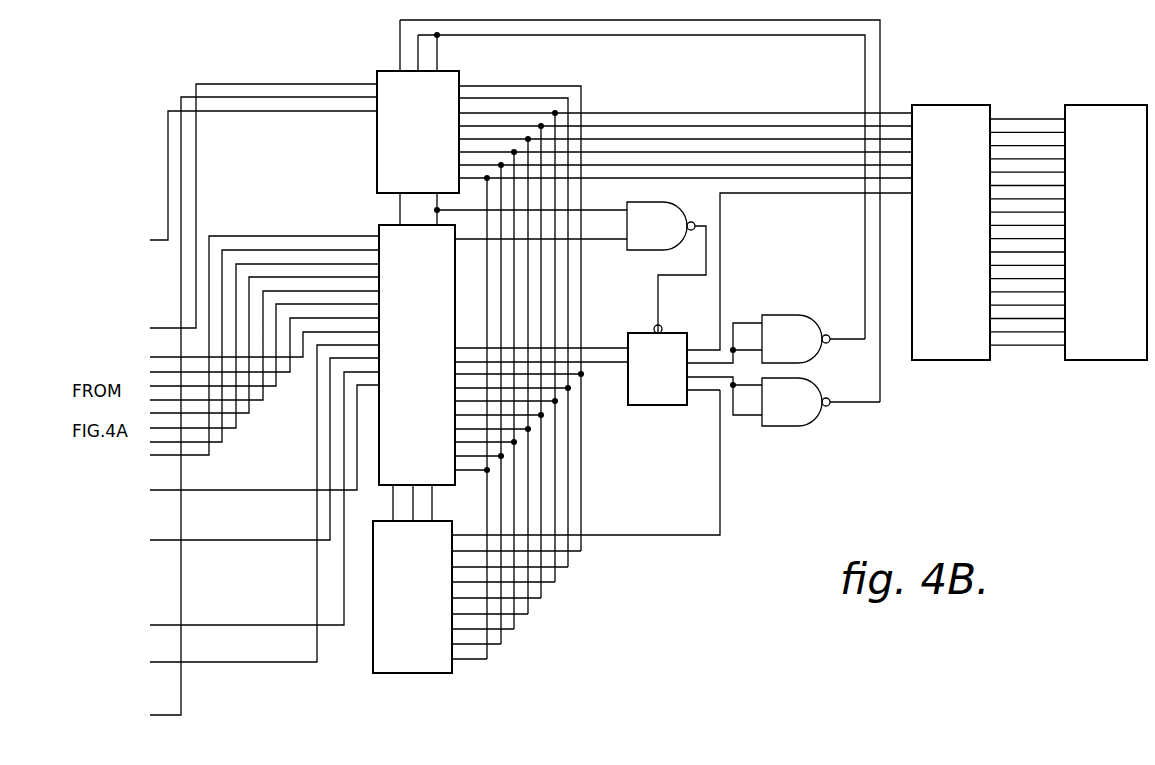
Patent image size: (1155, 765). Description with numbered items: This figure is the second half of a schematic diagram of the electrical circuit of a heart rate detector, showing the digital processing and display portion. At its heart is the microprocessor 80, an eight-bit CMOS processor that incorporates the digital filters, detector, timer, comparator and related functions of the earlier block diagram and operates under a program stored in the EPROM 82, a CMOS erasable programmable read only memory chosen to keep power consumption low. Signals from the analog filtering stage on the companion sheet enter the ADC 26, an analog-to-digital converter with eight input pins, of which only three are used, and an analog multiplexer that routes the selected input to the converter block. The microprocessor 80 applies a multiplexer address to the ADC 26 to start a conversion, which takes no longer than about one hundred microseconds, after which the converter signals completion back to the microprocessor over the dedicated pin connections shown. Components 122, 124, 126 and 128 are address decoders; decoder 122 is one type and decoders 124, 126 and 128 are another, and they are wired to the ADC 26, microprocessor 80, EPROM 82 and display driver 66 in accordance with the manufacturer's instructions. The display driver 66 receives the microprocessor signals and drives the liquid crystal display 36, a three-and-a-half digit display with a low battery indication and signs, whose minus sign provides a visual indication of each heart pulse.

The ADC 26 is at (460, 79).
The microprocessor 80 is at (420, 463).
The erasable programmable read only memory (EPROM) 82 is at (413, 673).
The address decoder 122 is at (641, 330).
The address decoder 124 is at (630, 250).
The address decoder 126 is at (810, 300).
The address decoder 128 is at (805, 426).
The display driver 66 is at (952, 360).
The liquid crystal display 36 is at (1080, 360).